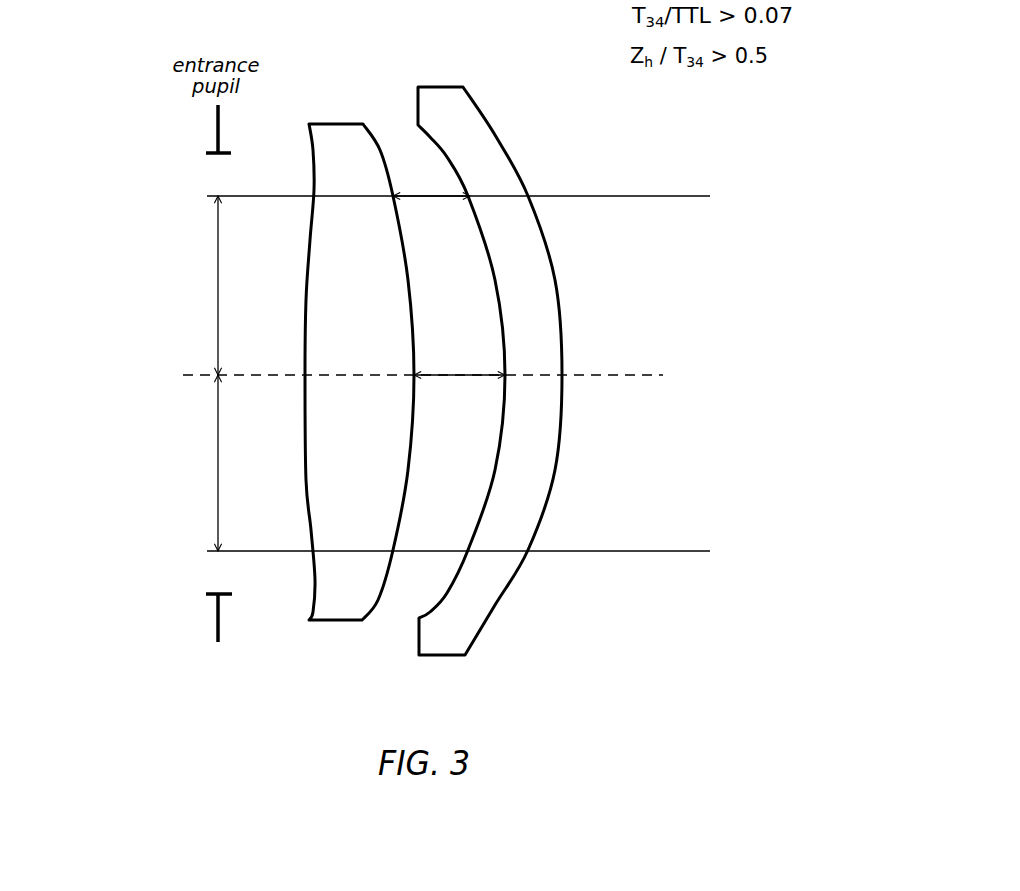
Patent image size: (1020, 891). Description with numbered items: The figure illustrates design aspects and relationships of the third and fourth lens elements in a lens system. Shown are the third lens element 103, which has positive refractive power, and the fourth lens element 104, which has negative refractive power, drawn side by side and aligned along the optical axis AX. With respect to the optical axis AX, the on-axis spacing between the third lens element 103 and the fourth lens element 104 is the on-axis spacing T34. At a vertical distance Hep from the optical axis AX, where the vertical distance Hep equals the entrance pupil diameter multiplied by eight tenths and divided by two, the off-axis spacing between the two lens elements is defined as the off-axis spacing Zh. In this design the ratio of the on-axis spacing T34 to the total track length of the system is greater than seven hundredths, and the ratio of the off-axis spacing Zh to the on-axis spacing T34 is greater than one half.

The third lens element 103 is at (327, 622).
The fourth lens element 104 is at (443, 657).
The optical axis AX is at (423, 376).
The vertical distance Hep is at (130, 373).
The off-axis spacing Zh is at (431, 184).
The on-axis spacing T34 is at (459, 359).